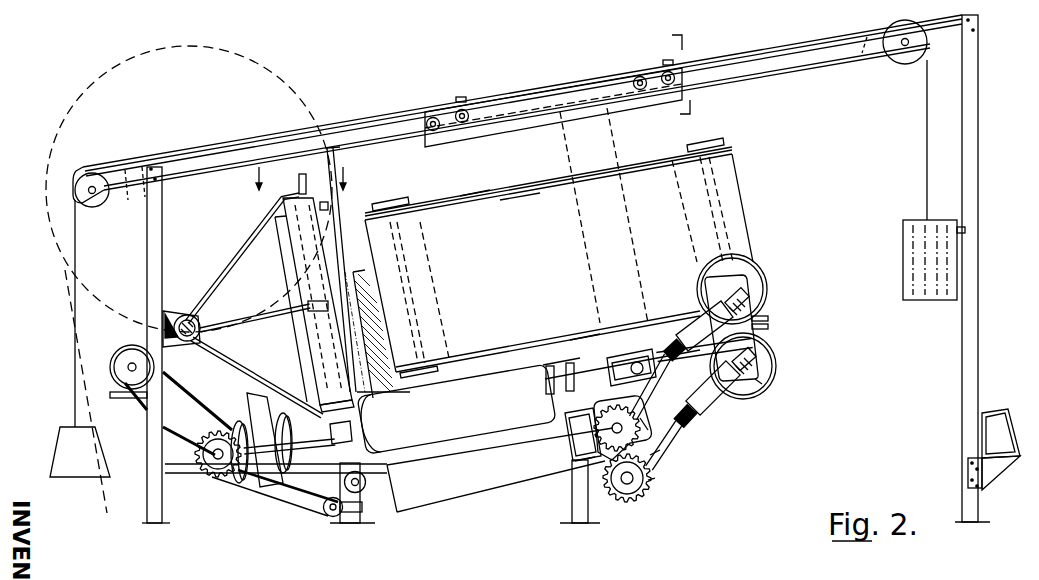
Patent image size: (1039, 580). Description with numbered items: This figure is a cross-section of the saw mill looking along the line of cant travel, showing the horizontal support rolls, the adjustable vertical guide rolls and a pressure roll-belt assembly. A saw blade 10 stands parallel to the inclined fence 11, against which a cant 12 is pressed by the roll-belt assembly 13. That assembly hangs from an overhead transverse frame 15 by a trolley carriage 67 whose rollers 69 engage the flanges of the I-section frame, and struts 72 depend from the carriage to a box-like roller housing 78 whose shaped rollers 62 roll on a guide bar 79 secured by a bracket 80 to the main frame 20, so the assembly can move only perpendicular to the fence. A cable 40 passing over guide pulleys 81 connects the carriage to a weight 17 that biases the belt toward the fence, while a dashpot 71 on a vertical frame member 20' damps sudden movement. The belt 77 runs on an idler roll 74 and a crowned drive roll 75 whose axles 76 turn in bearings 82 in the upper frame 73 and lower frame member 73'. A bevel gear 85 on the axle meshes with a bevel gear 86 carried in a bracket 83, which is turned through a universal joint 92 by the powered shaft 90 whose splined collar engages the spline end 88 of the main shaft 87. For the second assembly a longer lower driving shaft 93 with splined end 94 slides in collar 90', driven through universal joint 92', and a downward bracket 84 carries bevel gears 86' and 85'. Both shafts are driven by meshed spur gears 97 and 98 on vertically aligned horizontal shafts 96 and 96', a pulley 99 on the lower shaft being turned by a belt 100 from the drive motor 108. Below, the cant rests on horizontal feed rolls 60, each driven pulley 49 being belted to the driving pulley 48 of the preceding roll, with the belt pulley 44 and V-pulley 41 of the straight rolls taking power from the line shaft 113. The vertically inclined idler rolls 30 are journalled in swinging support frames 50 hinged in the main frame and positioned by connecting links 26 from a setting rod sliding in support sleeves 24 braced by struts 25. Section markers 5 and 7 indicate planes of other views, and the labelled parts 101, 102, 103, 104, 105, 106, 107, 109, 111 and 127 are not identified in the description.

The section line 5- 5 is at (671, 74).
The section line 7- 7 is at (301, 178).
The saw blade 10 is at (338, 213).
The inclined fence 11 is at (333, 203).
The cant 12 is at (357, 277).
The roll belt assembly 13 is at (762, 137).
The overhead transverse frame 15 is at (795, 53).
The weight 17 is at (62, 443).
The main frame 20 is at (592, 269).
The vertical frame member 20' is at (169, 345).
The support sleeves 24 is at (200, 332).
The struts 25 is at (237, 248).
The connecting link 26 is at (262, 317).
The vertically inclined idler rolls 30 is at (287, 262).
The cables 40 is at (378, 116).
The V-pulley 41 is at (306, 427).
The belt pulley 44 is at (248, 405).
The driving pulleys 48 is at (245, 473).
The driven pulleys 49 is at (289, 467).
The swinging support frames 50 is at (297, 278).
The horizontal rolls 60 is at (462, 437).
The shaped rollers 62 is at (605, 332).
The trolley carriage 67 is at (537, 95).
The rollers 69 is at (460, 110).
The dashpot device 71 is at (905, 257).
The struts 72 is at (585, 152).
The frame 73 is at (475, 177).
The lower frame member 73' is at (585, 346).
The idler roll 74 is at (420, 230).
The drive roll 75 is at (732, 212).
The axle 76 is at (372, 210).
The belt 77 is at (515, 210).
The roller housing 78 is at (627, 360).
The guide bar 79 is at (777, 345).
The bracket 80 is at (563, 367).
The guide pulleys 81 is at (107, 197).
The bearing 82 is at (395, 200).
The bracket 83 is at (758, 273).
The bracket 84 is at (773, 370).
The bevel gear 85 is at (791, 326).
The bevel gear 85' is at (791, 305).
The bevelled gear 86 is at (763, 325).
The bevel gear 86' is at (791, 393).
The main shaft 87 is at (660, 383).
The spline end 88 is at (670, 350).
The powered shaft 90 is at (699, 319).
The internally splined collar 90' is at (737, 406).
The universal joint 92 is at (707, 291).
The universal joint 92' is at (770, 390).
The driving shaft 93 is at (695, 447).
The splined end 94 is at (700, 417).
The horizontal shaft 96 is at (621, 425).
The horizontal shaft 96' is at (661, 488).
The spur gear 97 is at (640, 422).
The spur gear 98 is at (657, 477).
The pulley 99 is at (652, 497).
The belt 100 is at (513, 470).
The housing 101 is at (587, 463).
The pulley 102 is at (371, 480).
The pulley 103 is at (328, 503).
The belt 104 is at (367, 505).
The sprocket 105 is at (210, 483).
The hub 106 is at (218, 485).
The belt 107 is at (195, 403).
The main drive motor 108 is at (110, 360).
The bracket 109 is at (110, 395).
The pulley rim 111 is at (120, 370).
The line shaft 113 is at (232, 483).
The hook bracket 127 is at (302, 185).